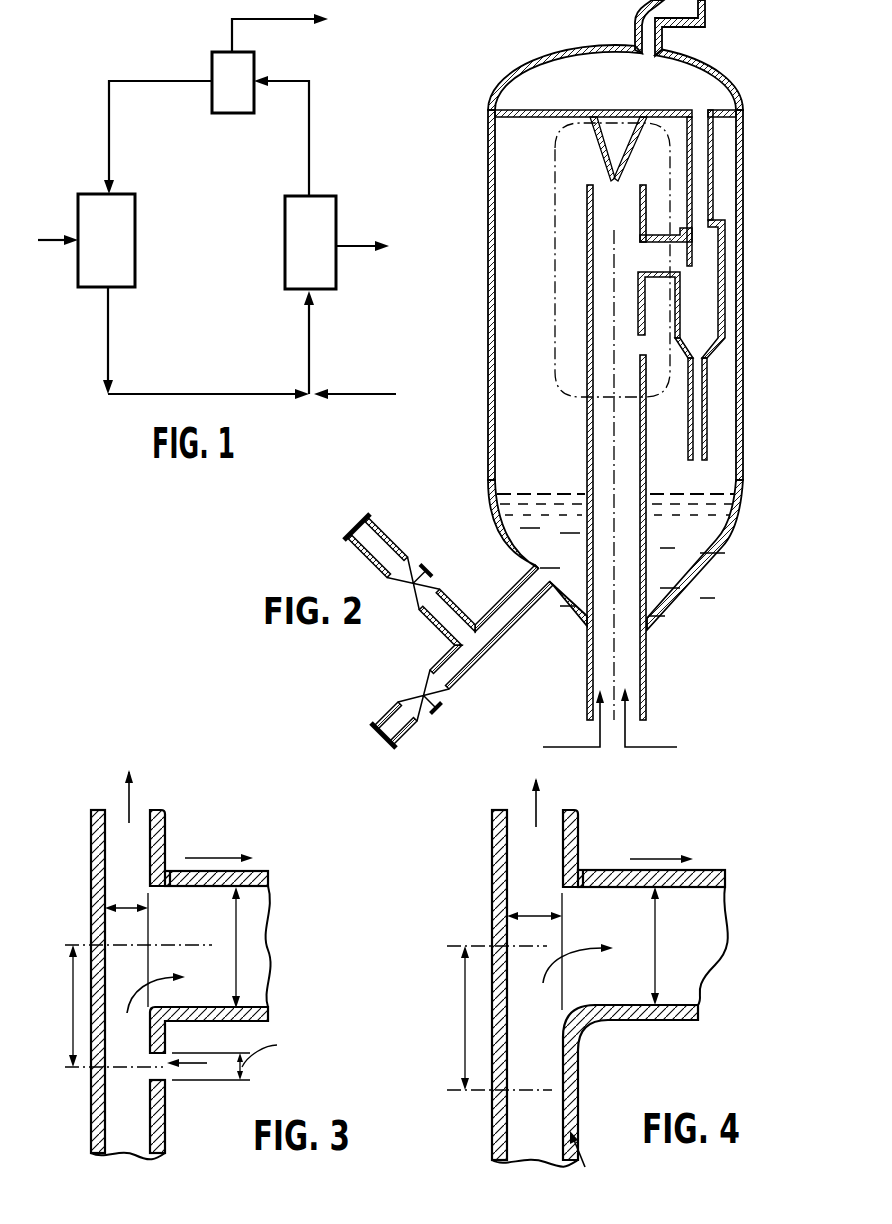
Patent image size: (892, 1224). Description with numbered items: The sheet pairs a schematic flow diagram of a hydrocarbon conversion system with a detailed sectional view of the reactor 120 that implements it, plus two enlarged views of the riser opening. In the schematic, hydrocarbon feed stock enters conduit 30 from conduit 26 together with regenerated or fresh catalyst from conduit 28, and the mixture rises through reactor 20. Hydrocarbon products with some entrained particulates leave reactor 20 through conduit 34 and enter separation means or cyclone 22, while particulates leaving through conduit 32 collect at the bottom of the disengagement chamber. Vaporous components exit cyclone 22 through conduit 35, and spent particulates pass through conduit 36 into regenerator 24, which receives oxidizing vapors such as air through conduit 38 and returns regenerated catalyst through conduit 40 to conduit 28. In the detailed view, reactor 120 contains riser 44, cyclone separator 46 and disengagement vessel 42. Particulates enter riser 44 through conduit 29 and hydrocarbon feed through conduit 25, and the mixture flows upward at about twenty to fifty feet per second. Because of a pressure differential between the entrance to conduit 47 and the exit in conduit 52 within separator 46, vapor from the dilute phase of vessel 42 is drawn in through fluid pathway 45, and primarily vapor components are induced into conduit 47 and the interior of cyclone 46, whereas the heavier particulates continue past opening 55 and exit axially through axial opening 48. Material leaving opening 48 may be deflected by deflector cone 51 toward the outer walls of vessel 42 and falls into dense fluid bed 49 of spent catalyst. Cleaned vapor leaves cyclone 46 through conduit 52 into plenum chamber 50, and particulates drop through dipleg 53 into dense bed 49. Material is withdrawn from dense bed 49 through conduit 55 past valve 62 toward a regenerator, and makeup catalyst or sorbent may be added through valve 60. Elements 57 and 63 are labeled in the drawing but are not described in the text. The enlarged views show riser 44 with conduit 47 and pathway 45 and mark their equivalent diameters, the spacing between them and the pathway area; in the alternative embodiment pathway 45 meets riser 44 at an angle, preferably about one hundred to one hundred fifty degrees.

In FIG. 1, the reactor 20 is at (297, 255).
In FIG. 1, the separation means 22 is at (220, 91).
In FIG. 1, the regenerator 24 is at (93, 251).
In FIG. 2, the conduit 25 is at (667, 747).
In FIG. 1, the conduit 26 is at (364, 394).
In FIG. 1, the conduit 28 is at (229, 392).
In FIG. 2, the conduit 29 is at (557, 747).
In FIG. 1, the conduit 30 is at (310, 338).
In FIG. 1, the conduit 32 is at (353, 240).
In FIG. 1, the conduit 34 is at (309, 136).
In FIG. 1, the conduit 35 is at (278, 22).
In FIG. 1, the conduit 36 is at (157, 80).
In FIG. 1, the conduit 38 is at (47, 239).
In FIG. 1, the conduit 40 is at (109, 325).
In FIG. 2, the disengagement vessel 42 is at (488, 222).
In FIG. 2, the riser 44 is at (633, 432).
In FIG. 3, the riser 44 is at (173, 955).
In FIG. 4, the riser 44 is at (592, 972).
In FIG. 2, the fluid pathway 45 is at (645, 343).
In FIG. 3, the fluid pathway 45 is at (190, 1080).
In FIG. 4, the fluid pathway 45 is at (577, 1127).
In FIG. 2, the cyclone separator 46 is at (725, 313).
In FIG. 2, the conduit 47 is at (657, 234).
In FIG. 3, the conduit 47 is at (253, 871).
In FIG. 4, the conduit 47 is at (710, 870).
In FIG. 2, the axial opening 48 is at (612, 198).
In FIG. 3, the axial opening 48 is at (143, 803).
In FIG. 2, the dense fluid bed 49 is at (690, 538).
In FIG. 2, the plenum chamber 50 is at (575, 89).
In FIG. 2, the deflector cone 51 is at (633, 152).
In FIG. 2, the conduit 52 is at (712, 173).
In FIG. 2, the dipleg 53 is at (710, 389).
In FIG. 2, the conduit 55 is at (635, 257).
In FIG. 2, the return flow 57 is at (677, 261).
In FIG. 2, the valve 60 is at (423, 573).
In FIG. 2, the valve 62 is at (422, 687).
In FIG. 2, the drain pipe 63 is at (527, 617).
In FIG. 2, the reactor 120 is at (614, 315).